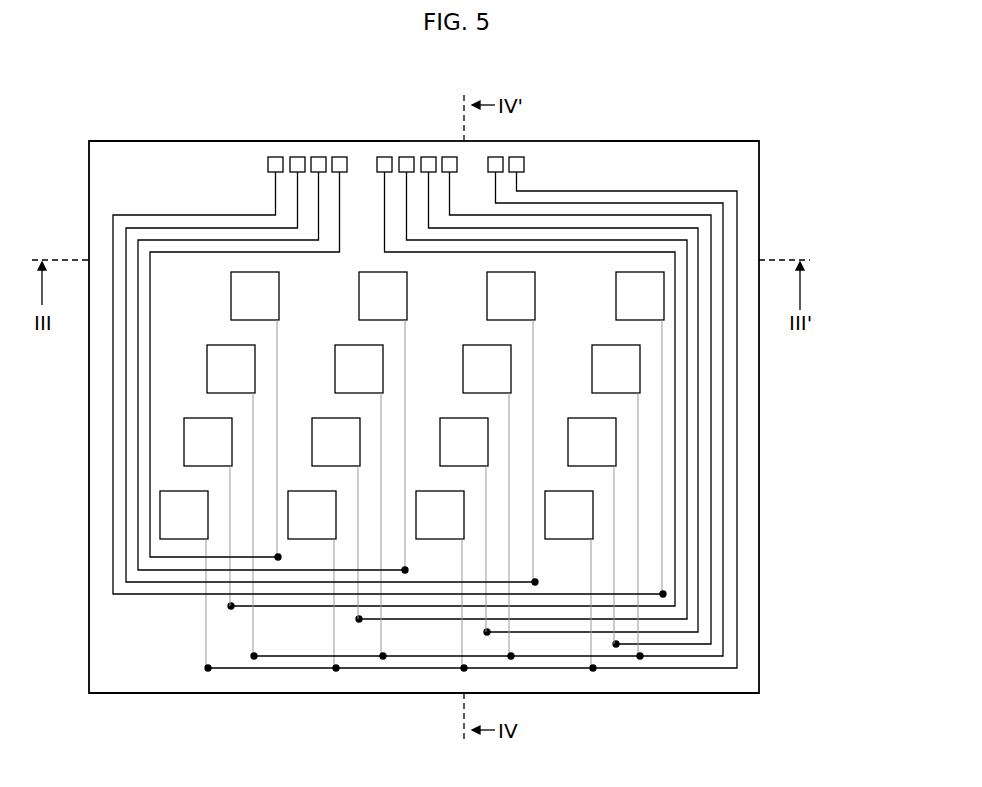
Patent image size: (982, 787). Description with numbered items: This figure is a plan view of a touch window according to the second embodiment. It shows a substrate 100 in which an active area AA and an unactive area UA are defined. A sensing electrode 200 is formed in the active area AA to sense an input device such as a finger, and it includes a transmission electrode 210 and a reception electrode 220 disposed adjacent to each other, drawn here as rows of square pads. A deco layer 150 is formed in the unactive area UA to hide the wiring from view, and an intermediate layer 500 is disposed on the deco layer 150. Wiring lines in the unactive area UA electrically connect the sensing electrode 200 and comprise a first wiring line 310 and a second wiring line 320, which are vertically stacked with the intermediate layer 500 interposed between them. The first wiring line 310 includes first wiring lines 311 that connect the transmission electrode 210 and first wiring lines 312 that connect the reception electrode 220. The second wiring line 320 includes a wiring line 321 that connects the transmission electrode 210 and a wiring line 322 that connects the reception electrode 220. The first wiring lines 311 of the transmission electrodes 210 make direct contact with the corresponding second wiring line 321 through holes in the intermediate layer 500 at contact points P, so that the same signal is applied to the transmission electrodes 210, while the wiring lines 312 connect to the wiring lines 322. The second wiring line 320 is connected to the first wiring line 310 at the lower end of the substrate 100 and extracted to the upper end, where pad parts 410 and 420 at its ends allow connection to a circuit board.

The substrate 100 is at (759, 178).
The deco layer 150 is at (148, 672).
The intermediate layer 500 is at (667, 160).
The unactive area UA is at (162, 160).
The active area AA is at (175, 362).
The pad part 420 is at (410, 157).
The pad part 410 is at (527, 166).
The sensing electrode 200 is at (516, 405).
The reception electrode 220 is at (655, 303).
The transmission electrode 210 is at (630, 370).
The first wiring line 310 is at (539, 420).
The first wiring line 311 is at (642, 483).
The first wiring line 312 is at (665, 410).
The second wiring line 320 is at (492, 421).
The first wiring line 321 is at (821, 522).
The second wiring line 322 is at (653, 591).
The contact point P is at (641, 660).